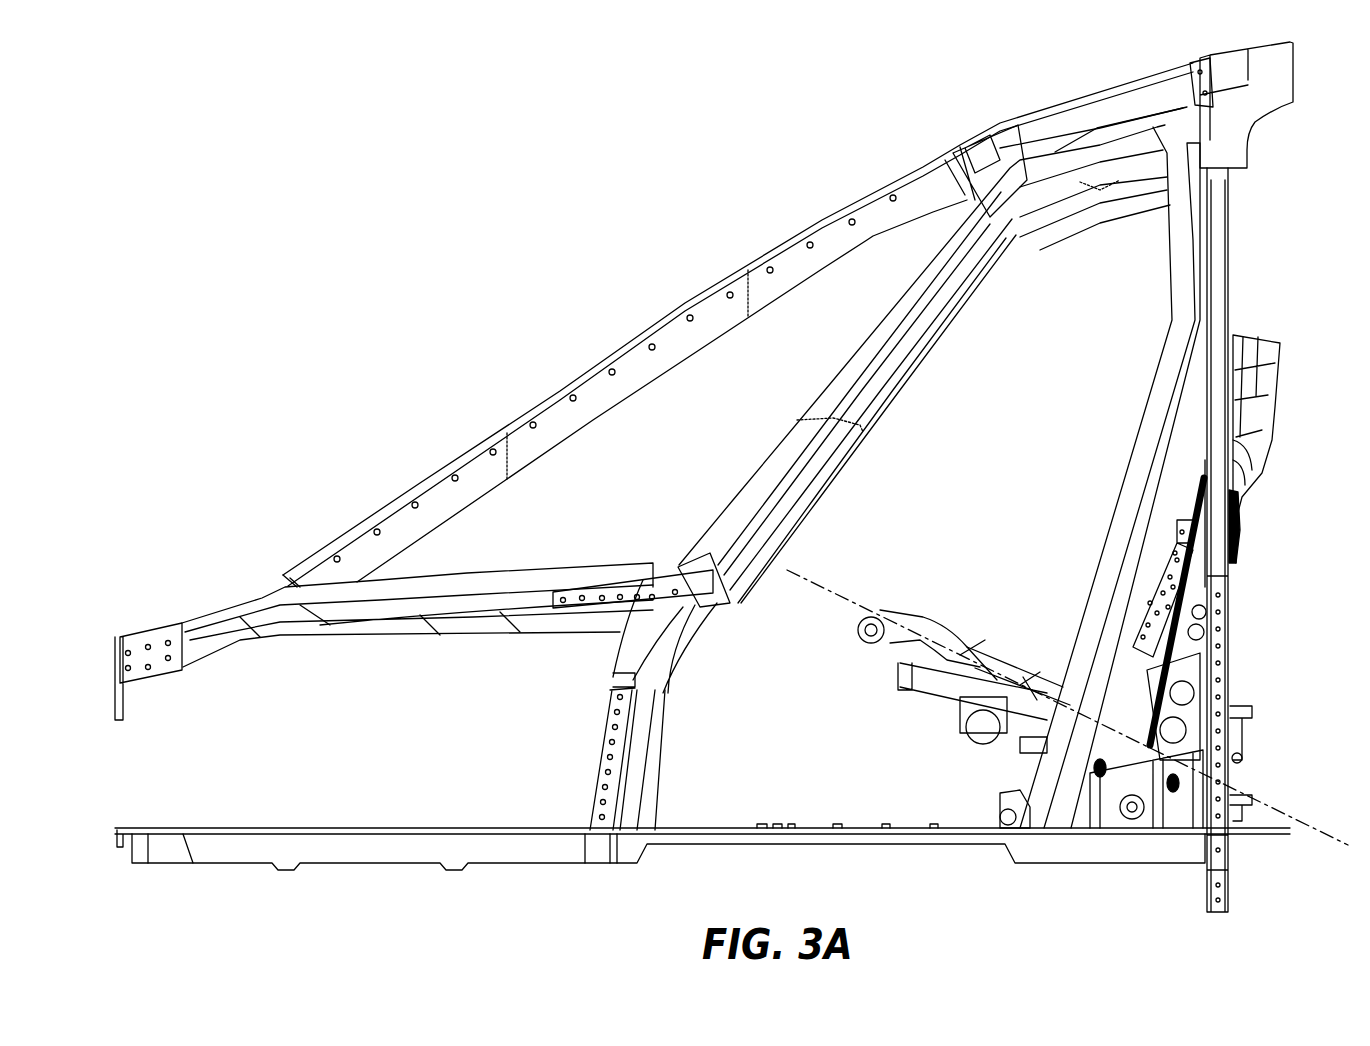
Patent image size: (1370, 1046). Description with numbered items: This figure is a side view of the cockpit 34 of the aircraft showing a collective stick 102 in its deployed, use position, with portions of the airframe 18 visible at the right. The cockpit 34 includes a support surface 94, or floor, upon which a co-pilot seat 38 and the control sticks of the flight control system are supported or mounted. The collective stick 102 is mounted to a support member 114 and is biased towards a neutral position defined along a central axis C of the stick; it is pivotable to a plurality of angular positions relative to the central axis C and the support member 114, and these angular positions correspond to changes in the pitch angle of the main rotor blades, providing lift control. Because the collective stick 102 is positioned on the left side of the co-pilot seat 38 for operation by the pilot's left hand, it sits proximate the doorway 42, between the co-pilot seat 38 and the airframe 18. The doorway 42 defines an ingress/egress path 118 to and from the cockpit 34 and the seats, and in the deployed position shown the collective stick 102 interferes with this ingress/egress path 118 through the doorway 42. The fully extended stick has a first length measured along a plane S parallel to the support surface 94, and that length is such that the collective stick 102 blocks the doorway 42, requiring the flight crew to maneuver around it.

The airframe 18 is at (1218, 257).
The cockpit 34 is at (1018, 432).
The co-pilot seat 38 is at (1255, 366).
The doorway 42 is at (782, 500).
The support surface 94 is at (910, 837).
The collective stick 102 is at (920, 598).
The support member 114 is at (1137, 777).
The ingress/egress path 118 is at (730, 773).
The plane S is at (163, 828).
The central axis C is at (826, 589).